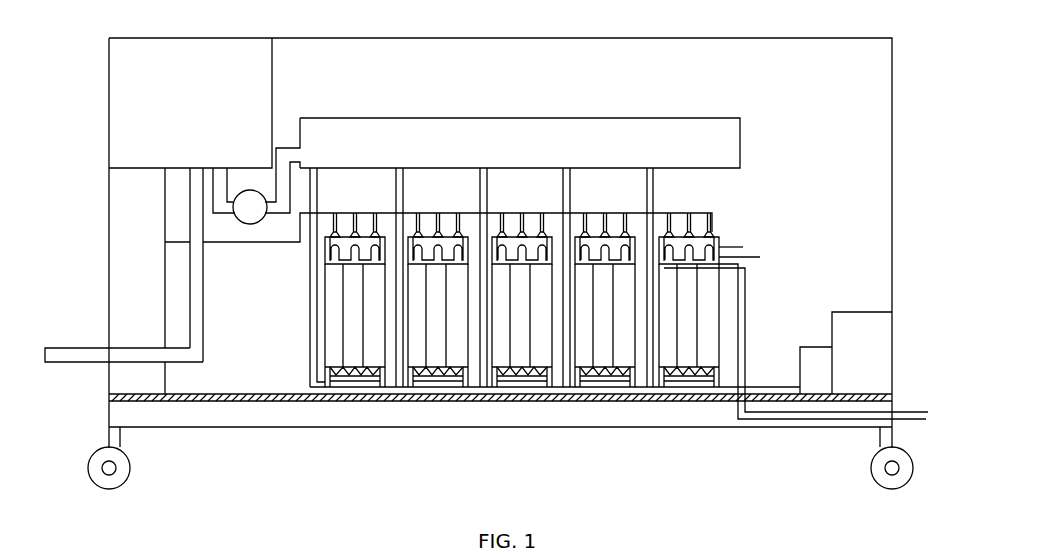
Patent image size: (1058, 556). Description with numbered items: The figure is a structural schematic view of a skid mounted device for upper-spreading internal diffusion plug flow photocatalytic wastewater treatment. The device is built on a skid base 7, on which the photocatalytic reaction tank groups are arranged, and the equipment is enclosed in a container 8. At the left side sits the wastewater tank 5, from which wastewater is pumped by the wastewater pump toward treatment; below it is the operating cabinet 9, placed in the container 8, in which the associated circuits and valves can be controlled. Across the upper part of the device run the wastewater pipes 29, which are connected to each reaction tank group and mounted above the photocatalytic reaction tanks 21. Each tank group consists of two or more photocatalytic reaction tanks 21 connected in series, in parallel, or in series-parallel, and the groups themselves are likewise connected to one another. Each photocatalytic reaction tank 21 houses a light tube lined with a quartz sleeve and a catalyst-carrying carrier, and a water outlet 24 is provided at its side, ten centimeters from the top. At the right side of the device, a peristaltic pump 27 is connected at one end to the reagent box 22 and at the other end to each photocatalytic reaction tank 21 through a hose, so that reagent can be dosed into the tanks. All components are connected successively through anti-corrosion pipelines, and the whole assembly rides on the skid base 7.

The container 8 is at (385, 38).
The wastewater tank 5 is at (109, 115).
The operating cabinet 9 is at (109, 258).
The wastewater pipes 29 is at (740, 143).
The internal diffusion horizontal plug flow photocatalytic reaction tank 21 is at (743, 247).
The water outlet 24 is at (760, 257).
The peristaltic pump 27 is at (812, 347).
The reagent box 22 is at (892, 328).
The skid base 7 is at (897, 448).